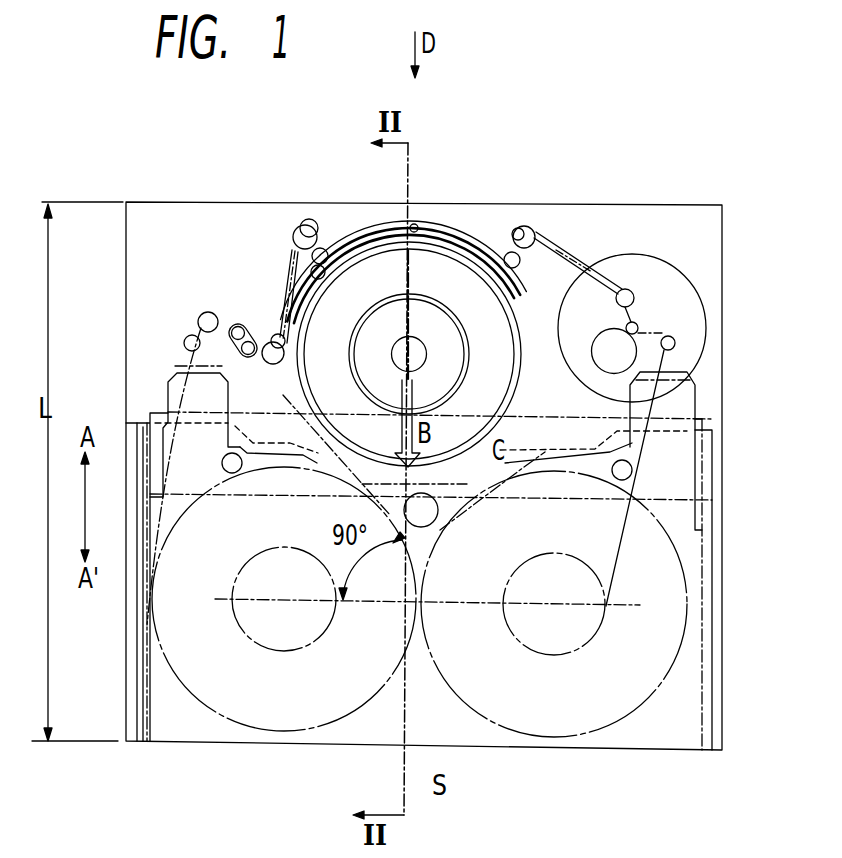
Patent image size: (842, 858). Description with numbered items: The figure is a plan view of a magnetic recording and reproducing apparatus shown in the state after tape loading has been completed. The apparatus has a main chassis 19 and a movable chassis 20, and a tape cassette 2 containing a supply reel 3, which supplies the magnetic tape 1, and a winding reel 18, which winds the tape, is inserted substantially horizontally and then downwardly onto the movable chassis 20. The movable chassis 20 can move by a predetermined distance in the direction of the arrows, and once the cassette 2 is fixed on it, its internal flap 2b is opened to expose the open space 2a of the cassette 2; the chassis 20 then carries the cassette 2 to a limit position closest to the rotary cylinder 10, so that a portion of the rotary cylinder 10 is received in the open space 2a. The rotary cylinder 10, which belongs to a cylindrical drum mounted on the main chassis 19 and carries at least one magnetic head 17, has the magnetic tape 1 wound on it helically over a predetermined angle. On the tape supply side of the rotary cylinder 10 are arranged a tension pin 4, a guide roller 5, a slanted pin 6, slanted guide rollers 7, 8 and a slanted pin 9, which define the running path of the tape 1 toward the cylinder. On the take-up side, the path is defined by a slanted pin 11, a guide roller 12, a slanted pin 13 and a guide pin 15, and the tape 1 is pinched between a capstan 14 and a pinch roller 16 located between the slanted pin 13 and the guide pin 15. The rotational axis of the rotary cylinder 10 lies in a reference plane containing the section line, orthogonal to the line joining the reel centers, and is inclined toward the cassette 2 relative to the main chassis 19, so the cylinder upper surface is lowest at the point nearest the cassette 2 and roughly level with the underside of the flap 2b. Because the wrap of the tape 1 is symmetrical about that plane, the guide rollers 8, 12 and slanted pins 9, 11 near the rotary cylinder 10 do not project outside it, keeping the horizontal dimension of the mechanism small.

The magnetic tape 1 is at (562, 247).
The tape cassette 2 is at (177, 737).
The open space 2a is at (297, 416).
The internal flap 2b is at (528, 432).
The supply reel 3 is at (313, 728).
The tension pin 4 is at (185, 340).
The guide roller 5 is at (203, 313).
The slanted pin 6 is at (238, 325).
The slanted guide roller 7 is at (275, 341).
The slanted guide roller 8 is at (307, 224).
The slanted pin 9 is at (326, 248).
The rotary cylinder 10 is at (441, 303).
The slanted pin 11 is at (507, 252).
The guide roller 12 is at (525, 226).
The slanted pin 13 is at (626, 288).
The capstan 14 is at (634, 326).
The guide pin 15 is at (674, 342).
The pinch roller 16 is at (622, 353).
The magnetic head 17 is at (420, 217).
The winding reel 18 is at (558, 732).
The main chassis 19 is at (680, 222).
The movable chassis 20 is at (150, 423).